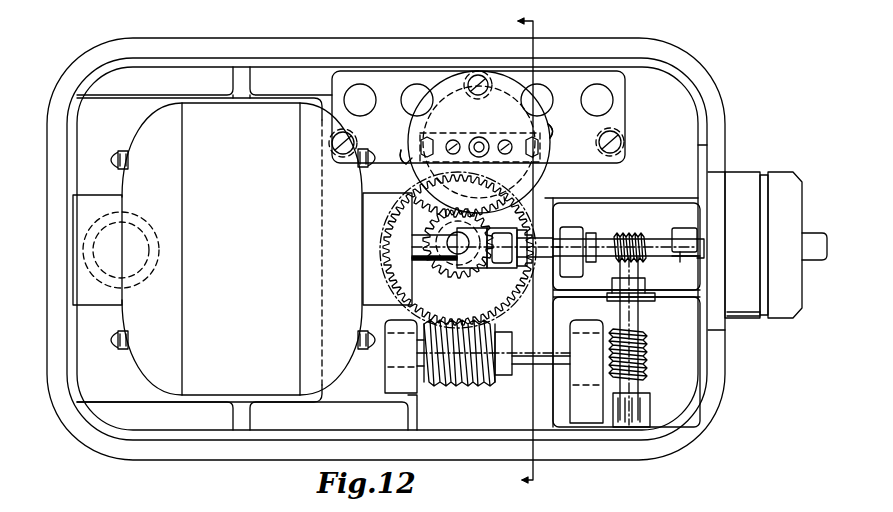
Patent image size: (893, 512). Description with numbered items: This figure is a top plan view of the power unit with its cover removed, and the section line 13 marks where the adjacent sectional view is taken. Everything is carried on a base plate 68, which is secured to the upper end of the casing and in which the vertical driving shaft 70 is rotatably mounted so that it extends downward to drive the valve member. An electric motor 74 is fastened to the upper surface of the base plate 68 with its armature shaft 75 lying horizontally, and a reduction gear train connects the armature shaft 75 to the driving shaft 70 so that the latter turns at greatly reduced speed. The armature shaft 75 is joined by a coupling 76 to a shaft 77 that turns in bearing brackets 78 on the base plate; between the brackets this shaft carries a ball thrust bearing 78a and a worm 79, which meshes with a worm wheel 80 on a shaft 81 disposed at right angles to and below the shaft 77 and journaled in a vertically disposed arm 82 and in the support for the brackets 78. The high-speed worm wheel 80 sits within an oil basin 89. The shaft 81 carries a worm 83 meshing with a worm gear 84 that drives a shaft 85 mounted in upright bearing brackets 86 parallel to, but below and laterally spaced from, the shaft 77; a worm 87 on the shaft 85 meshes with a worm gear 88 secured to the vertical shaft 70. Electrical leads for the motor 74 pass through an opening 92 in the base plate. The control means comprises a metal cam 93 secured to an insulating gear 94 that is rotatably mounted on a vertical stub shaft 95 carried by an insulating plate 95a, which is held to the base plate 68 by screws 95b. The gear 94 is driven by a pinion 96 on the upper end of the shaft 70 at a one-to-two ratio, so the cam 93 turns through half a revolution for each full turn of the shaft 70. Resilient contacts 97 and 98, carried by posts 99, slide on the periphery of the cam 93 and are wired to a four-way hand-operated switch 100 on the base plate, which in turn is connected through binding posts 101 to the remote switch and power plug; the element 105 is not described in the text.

The section line 13- 13 is at (515, 252).
The base plate 68 is at (156, 436).
The vertical driving shaft 70 is at (445, 273).
The electric motor 74 is at (232, 180).
The armature shaft 75 is at (398, 282).
The coupling 76 is at (553, 236).
The shaft 77 is at (610, 238).
The bearing brackets 78 is at (683, 228).
The ball thrust bearing 78a is at (605, 220).
The worm 79 is at (636, 236).
The worm wheel 80 is at (683, 259).
The shaft 81 is at (618, 289).
The vertically disposed arm 82 is at (650, 407).
The worm 83 is at (647, 347).
The worm gear 84 is at (642, 300).
The shaft 85 is at (554, 366).
The upright bearing brackets 86 is at (395, 387).
The worm 87 is at (461, 384).
The worm gear 88 is at (516, 300).
The oil basin 89 is at (628, 203).
The opening 92 is at (124, 282).
The metal cam 93 is at (461, 124).
The gear 94 is at (440, 207).
The stub shaft 95 is at (487, 156).
The insulating plate 95a is at (622, 95).
The screws 95b is at (345, 152).
The pinion 96 is at (475, 272).
The resilient contact 97 is at (408, 164).
The resilient contact 98 is at (553, 131).
The posts 99 is at (418, 143).
The four-way hand-operated switch 100 is at (735, 172).
The binding posts 101 is at (362, 90).
The screw 105 is at (488, 90).